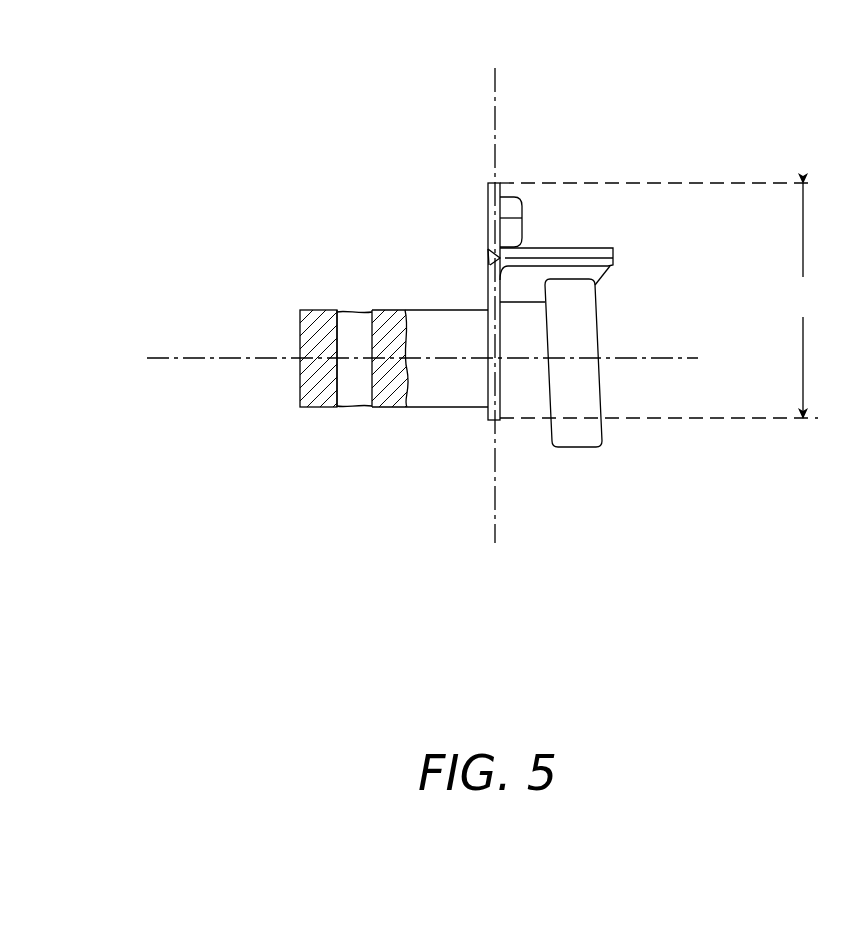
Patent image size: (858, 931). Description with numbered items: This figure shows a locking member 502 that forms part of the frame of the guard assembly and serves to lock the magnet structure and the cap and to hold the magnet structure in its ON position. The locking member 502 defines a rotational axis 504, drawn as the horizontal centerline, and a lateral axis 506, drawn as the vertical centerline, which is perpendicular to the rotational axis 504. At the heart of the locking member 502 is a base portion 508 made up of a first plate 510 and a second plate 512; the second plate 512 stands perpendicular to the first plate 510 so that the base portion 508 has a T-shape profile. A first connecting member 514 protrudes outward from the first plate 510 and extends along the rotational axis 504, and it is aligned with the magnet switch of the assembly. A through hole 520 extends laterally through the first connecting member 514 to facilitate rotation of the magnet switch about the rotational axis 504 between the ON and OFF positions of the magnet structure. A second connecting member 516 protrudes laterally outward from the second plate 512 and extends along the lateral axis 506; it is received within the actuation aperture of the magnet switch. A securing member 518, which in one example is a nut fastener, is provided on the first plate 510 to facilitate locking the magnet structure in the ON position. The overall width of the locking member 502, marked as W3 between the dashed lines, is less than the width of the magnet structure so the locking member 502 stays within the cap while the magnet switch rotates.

The locking member 502 is at (600, 154).
The rotational axis 504 is at (178, 358).
The lateral axis 506 is at (494, 85).
The base portion 508 is at (468, 225).
The first plate 510 is at (497, 252).
The second plate 512 is at (590, 248).
The first connecting member 514 is at (417, 408).
The second connecting member 516 is at (585, 388).
The securing member 518 is at (510, 203).
The through hole 520 is at (348, 410).